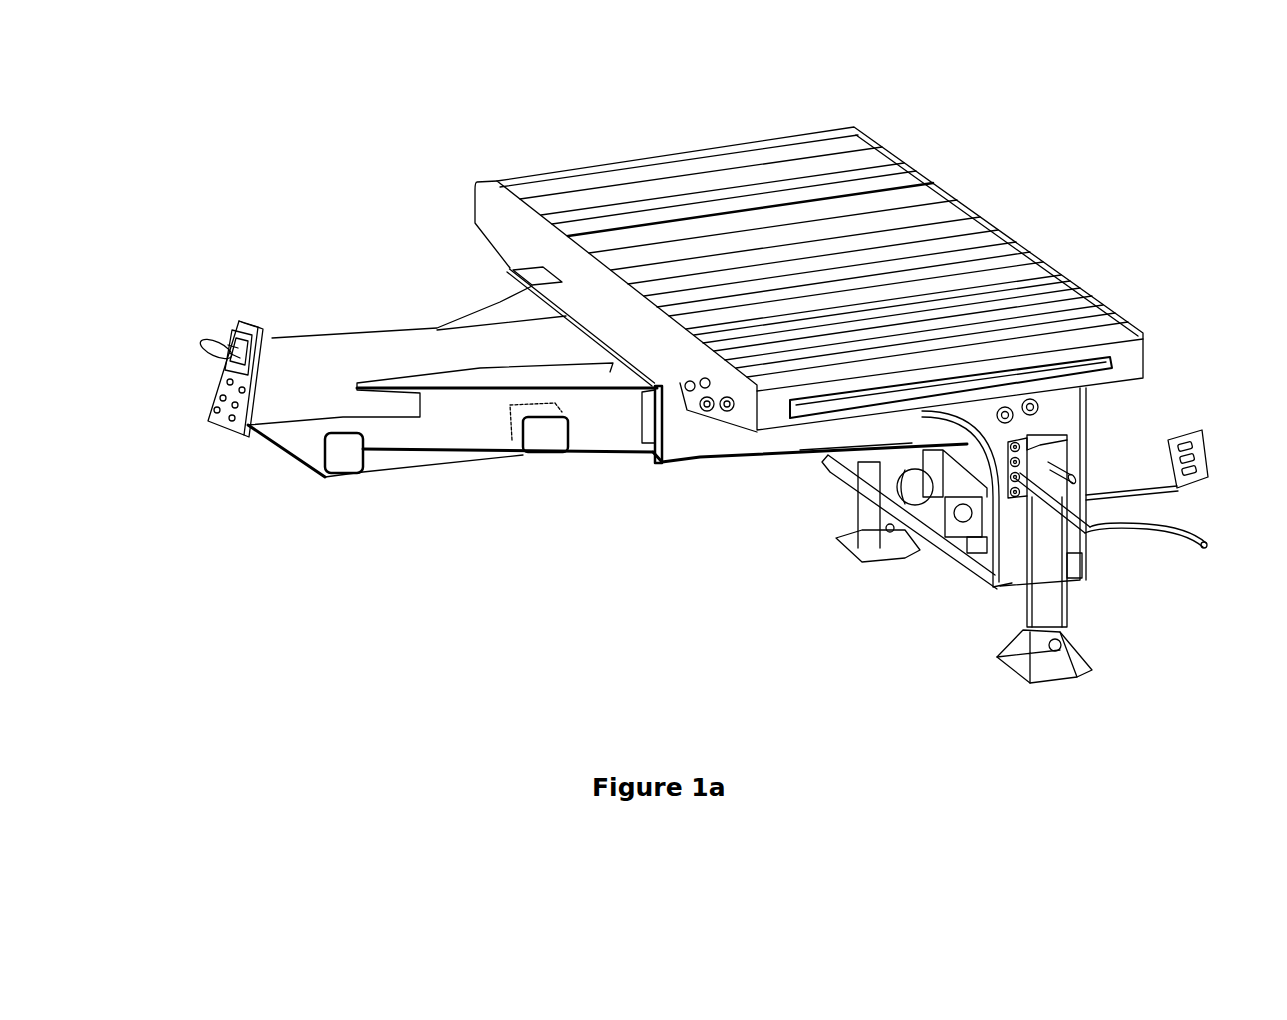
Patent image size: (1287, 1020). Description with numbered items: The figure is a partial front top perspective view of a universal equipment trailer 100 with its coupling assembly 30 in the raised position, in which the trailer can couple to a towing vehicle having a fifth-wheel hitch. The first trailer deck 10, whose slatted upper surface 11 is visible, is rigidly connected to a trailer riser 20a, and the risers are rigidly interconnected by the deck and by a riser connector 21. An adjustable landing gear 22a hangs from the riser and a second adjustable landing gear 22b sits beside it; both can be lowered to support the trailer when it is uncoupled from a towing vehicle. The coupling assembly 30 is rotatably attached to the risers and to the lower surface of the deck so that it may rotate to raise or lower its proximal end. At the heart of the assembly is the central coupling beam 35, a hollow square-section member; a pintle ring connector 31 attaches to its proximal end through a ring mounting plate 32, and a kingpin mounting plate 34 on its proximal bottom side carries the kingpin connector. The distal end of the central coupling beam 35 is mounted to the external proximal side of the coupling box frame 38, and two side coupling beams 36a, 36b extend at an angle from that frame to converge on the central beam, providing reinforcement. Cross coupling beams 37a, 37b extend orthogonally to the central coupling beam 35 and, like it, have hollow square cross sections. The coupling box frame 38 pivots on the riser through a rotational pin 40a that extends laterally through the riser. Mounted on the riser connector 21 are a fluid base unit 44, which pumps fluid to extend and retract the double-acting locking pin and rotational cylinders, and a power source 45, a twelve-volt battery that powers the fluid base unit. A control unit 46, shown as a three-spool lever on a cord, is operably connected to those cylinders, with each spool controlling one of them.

The first trailer deck 10 is at (856, 131).
The upper surface 11 is at (652, 178).
The trailer riser 20a is at (1073, 548).
The riser connector 21 is at (980, 577).
The adjustable landing gear 22a is at (1015, 672).
The adjustable landing gear 22b is at (843, 547).
The coupling assembly 30 is at (664, 476).
The pintle ring connector 31 is at (205, 342).
The ring mounting plate 32 is at (222, 425).
The kingpin mounting plate 34 is at (373, 460).
The central coupling beam 35 is at (322, 347).
The side coupling beam 36a is at (613, 427).
The side coupling beam 36b is at (493, 317).
The cross coupling beam 37a is at (343, 462).
The cross coupling beam 37b is at (547, 443).
The coupling box frame 38 is at (718, 440).
The rotational pin 40a is at (1043, 407).
The fluid base unit 44 is at (928, 507).
The power source 45 is at (975, 547).
The control unit 46 is at (1210, 450).
The universal equipment trailer 100 is at (390, 600).